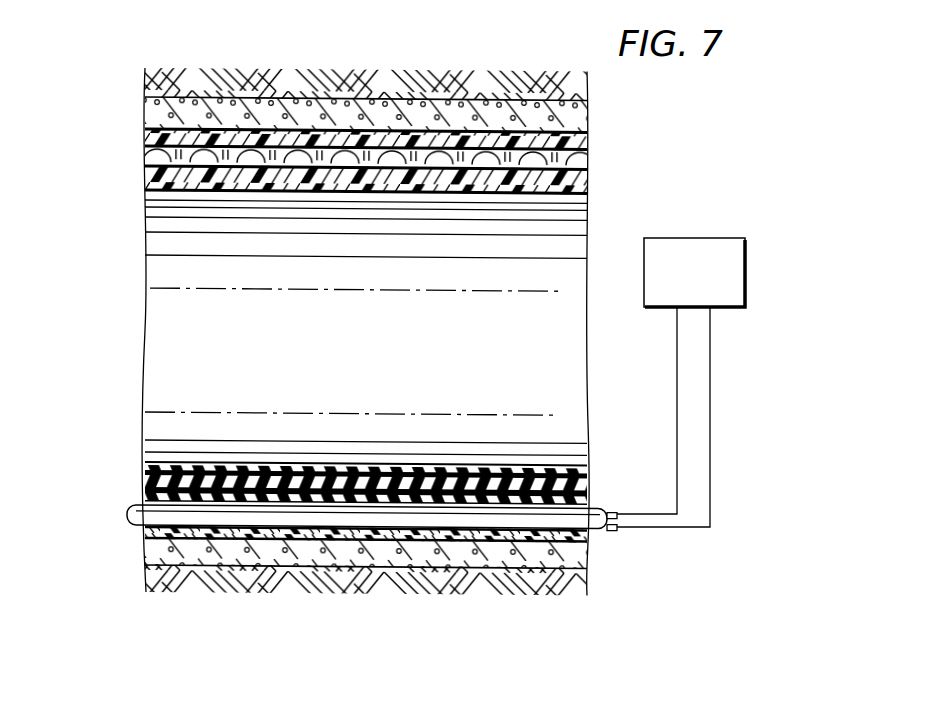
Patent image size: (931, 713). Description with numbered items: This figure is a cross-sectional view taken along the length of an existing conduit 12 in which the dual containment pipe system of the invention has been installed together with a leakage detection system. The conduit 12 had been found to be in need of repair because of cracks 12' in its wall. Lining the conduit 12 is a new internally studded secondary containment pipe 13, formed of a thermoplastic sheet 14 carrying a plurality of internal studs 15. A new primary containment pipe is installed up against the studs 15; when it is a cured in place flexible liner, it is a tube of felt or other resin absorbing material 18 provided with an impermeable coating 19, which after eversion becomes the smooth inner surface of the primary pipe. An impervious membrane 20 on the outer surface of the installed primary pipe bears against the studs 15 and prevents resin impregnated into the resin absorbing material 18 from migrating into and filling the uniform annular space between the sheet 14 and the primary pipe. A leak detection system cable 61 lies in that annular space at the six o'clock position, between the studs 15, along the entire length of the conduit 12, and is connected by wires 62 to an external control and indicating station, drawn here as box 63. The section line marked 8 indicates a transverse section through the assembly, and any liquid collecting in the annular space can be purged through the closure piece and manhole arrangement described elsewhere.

The section line 8- 8 is at (368, 455).
The existing conduit 12 is at (366, 596).
The cracks 12' is at (366, 599).
The secondary containment pipe 13 is at (594, 543).
The thermoplastic sheet 14 is at (550, 142).
The internal studs 15 is at (568, 160).
The resin absorbing material 18 is at (158, 181).
The impermeable coating 19 is at (160, 208).
The impervious membrane 20 is at (157, 143).
The leak detection system cable 61 is at (127, 515).
The wires 62 is at (677, 402).
The monitor unit 63 is at (718, 273).